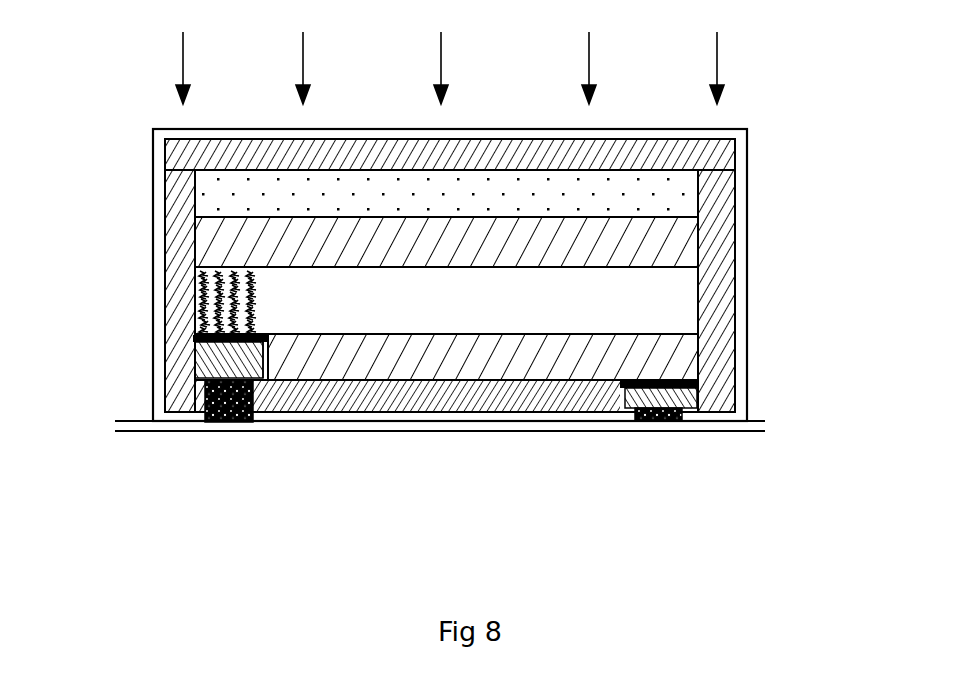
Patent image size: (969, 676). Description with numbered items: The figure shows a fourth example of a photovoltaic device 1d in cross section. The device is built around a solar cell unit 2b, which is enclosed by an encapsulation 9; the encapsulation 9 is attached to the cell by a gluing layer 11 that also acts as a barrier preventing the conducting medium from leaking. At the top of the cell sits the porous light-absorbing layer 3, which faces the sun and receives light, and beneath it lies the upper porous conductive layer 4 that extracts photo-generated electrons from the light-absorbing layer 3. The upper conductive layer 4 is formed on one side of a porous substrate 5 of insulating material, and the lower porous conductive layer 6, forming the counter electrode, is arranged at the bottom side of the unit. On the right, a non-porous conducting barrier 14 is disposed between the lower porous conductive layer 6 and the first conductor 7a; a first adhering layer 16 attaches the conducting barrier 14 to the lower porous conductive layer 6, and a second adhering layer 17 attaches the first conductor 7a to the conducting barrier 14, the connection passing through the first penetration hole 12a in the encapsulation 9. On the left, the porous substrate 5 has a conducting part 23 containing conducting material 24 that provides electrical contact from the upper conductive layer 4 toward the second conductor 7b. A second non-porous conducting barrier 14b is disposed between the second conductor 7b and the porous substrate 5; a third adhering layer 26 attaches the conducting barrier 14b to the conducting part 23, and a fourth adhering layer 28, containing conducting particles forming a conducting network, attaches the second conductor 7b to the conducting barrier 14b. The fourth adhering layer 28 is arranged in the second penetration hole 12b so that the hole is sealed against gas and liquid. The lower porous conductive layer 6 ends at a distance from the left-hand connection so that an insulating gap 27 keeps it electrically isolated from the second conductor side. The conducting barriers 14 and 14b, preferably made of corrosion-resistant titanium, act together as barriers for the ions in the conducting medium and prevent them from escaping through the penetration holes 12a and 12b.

The encapsulation 9 is at (148, 143).
The photovoltaic device 1d is at (776, 146).
The solar cell unit 2b is at (465, 158).
The light-absorbing layer 3 is at (680, 200).
The upper porous conductive layer 4 is at (680, 238).
The porous substrate 5 is at (673, 292).
The gluing layer of the encapsulation 11 is at (737, 320).
The lower porous conductive layer 6 is at (683, 353).
The first adhering layer 16 is at (693, 387).
The non-porous conducting barrier 14 is at (735, 408).
The conducting part of the porous substrate 23 is at (197, 283).
The conducting material 24 is at (197, 301).
The third adhering layer 26 is at (203, 338).
The second non-porous conducting barrier 14b is at (223, 360).
The insulating gap 27 is at (270, 392).
The fourth adhering layer 28 is at (225, 422).
The second penetration hole 12b is at (249, 440).
The first penetration hole 12a is at (638, 438).
The second adhering layer 17 is at (667, 421).
The first conductor 7a is at (737, 432).
The second conductor 7b is at (165, 421).